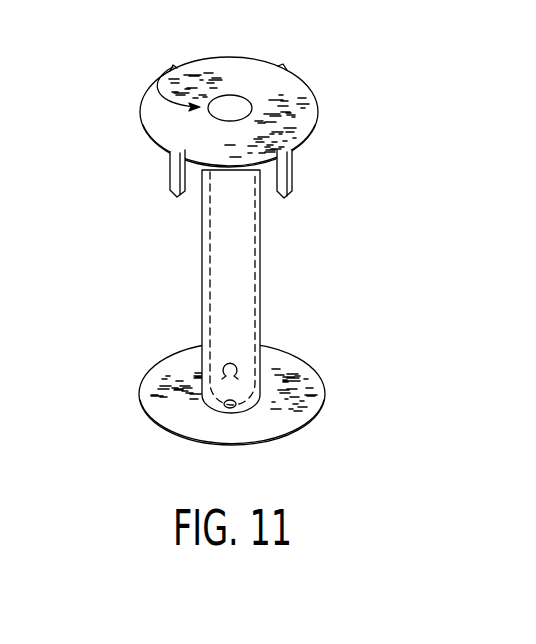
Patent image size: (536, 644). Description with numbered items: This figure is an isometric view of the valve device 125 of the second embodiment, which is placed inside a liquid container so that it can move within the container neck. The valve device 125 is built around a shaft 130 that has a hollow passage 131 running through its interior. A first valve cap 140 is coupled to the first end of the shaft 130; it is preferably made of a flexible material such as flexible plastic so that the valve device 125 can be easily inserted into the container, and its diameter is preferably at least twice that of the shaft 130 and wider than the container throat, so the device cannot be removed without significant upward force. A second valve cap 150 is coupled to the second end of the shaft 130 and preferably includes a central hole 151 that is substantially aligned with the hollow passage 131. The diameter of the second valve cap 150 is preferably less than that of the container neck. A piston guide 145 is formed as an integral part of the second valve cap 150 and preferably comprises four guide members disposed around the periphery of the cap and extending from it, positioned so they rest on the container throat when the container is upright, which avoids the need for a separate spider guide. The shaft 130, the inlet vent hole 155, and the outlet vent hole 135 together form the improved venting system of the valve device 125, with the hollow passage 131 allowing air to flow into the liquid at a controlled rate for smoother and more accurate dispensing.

The valve device 125 is at (230, 327).
The shaft 130 is at (171, 291).
The hollow passage 131 is at (210, 307).
The outlet vent hole 135 is at (231, 408).
The first valve cap 140 is at (195, 447).
The piston guide 145 is at (292, 170).
The second valve cap 150 is at (256, 88).
The central hole 151 is at (160, 78).
The inlet vent hole 155 is at (235, 107).